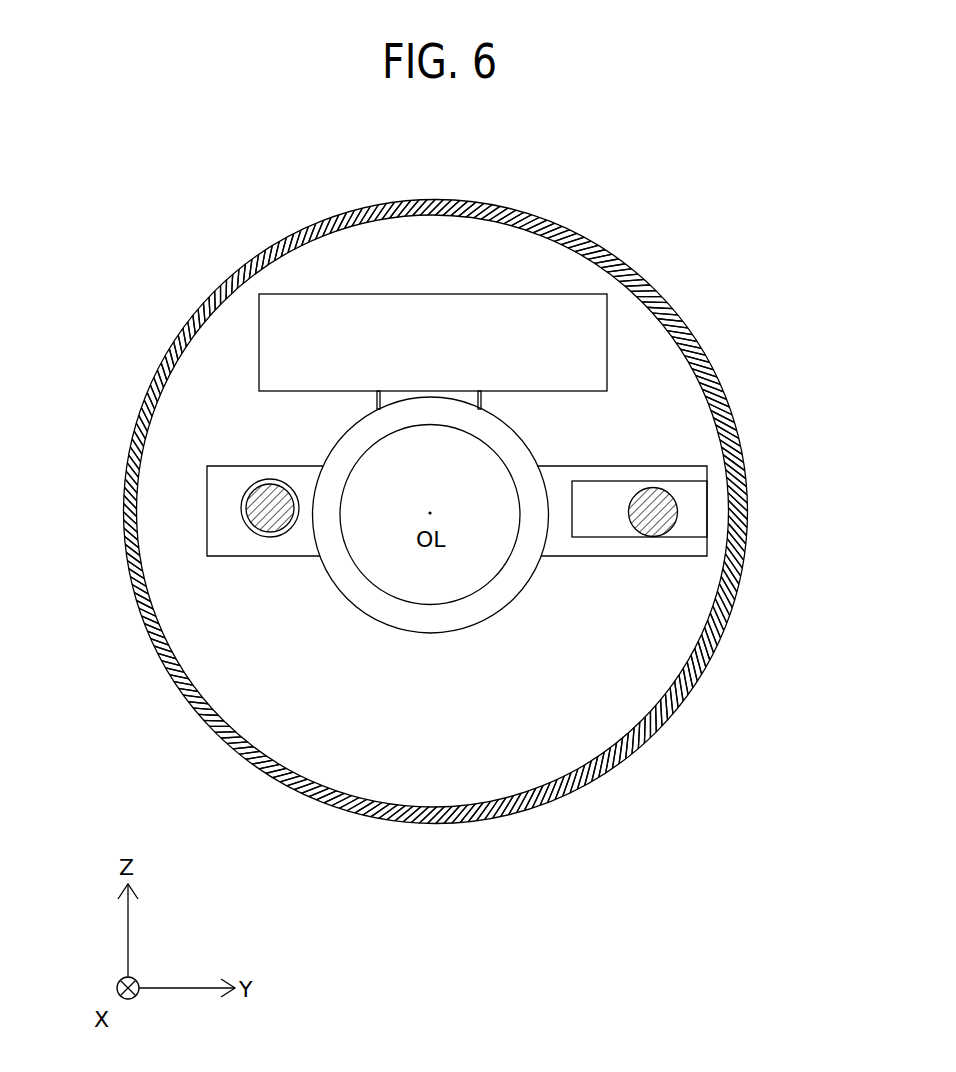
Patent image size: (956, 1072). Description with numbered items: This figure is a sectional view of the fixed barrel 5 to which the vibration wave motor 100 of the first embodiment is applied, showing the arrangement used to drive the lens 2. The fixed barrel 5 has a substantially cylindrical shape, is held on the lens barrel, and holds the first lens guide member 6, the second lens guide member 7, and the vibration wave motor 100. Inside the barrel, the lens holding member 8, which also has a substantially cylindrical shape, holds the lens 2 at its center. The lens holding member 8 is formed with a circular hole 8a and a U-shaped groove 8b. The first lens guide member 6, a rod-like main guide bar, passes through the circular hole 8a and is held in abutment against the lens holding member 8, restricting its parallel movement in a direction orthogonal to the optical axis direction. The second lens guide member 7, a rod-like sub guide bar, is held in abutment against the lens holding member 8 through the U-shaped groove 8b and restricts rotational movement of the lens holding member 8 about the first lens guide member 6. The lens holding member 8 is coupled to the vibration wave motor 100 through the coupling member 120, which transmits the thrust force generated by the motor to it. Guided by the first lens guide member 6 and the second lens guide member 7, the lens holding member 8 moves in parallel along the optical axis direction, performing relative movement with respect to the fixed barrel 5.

The fixed barrel 5 is at (63, 142).
The vibration wave motor 100 is at (607, 322).
The coupling member 120 is at (477, 398).
The first lens guide member 6 is at (250, 523).
The second lens guide member 7 is at (666, 507).
The lens holding member 8 is at (485, 618).
The circular hole 8a is at (250, 503).
The U-shaped groove 8b is at (692, 535).
The lens 2 is at (475, 565).